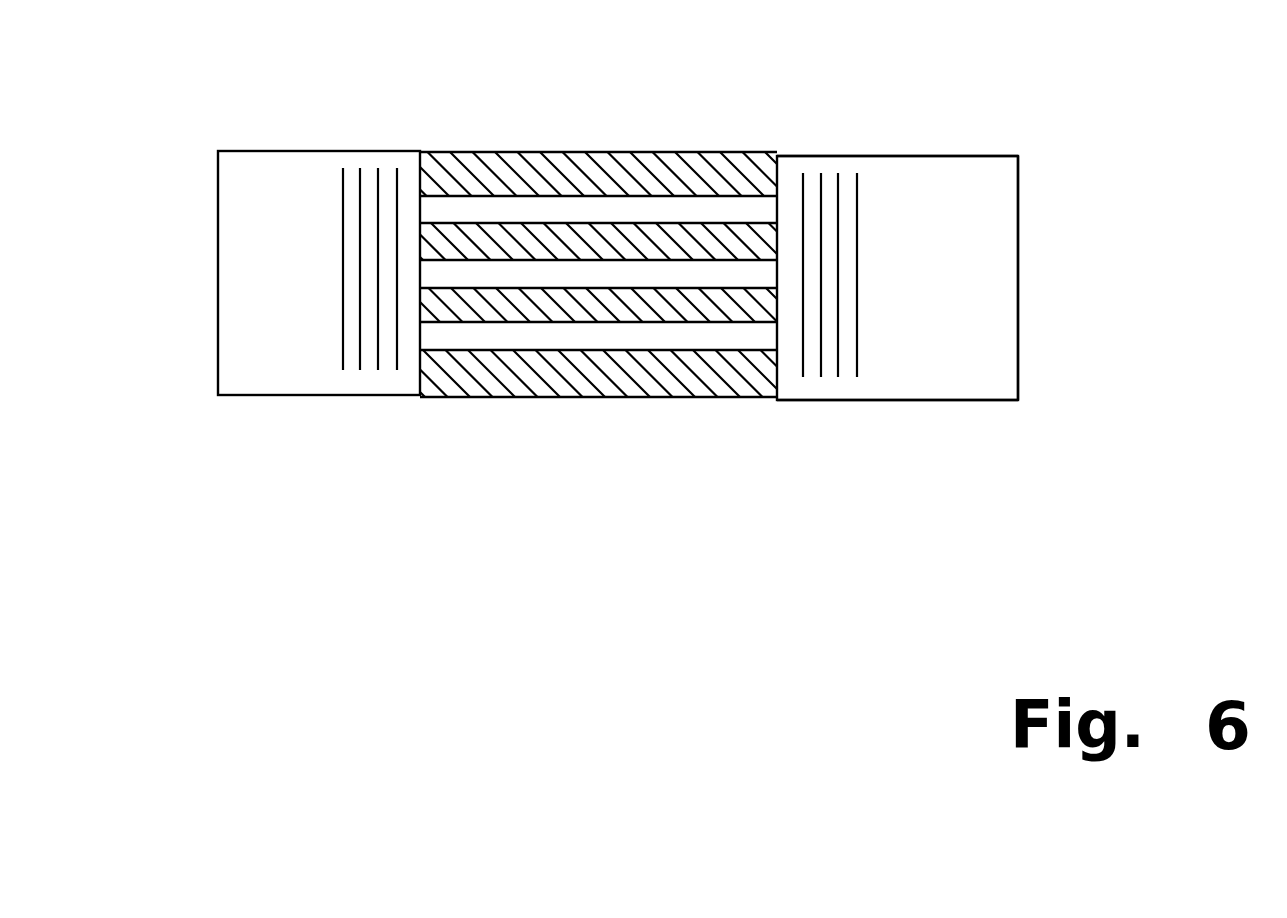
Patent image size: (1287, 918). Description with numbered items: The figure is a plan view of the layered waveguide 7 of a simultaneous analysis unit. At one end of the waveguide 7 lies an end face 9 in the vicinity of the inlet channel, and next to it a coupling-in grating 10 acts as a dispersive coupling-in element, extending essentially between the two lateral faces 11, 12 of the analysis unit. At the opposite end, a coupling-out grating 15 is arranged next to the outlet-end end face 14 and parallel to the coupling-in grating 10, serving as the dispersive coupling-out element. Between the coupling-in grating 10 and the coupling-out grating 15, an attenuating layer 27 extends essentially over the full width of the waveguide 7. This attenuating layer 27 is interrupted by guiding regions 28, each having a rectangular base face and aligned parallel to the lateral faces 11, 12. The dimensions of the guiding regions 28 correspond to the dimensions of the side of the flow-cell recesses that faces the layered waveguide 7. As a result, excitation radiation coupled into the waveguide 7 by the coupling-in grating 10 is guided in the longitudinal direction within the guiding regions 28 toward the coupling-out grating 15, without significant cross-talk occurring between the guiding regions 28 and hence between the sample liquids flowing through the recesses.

The waveguide 7 is at (992, 212).
The end face 9 is at (218, 221).
The coupling-in grating 10 is at (327, 277).
The lateral face 11 is at (948, 400).
The lateral face 12 is at (921, 156).
The outlet-end end face 14 is at (1018, 260).
The coupling-out grating 15 is at (876, 321).
The attenuating layer 27 is at (522, 152).
The guiding regions 28 is at (673, 213).